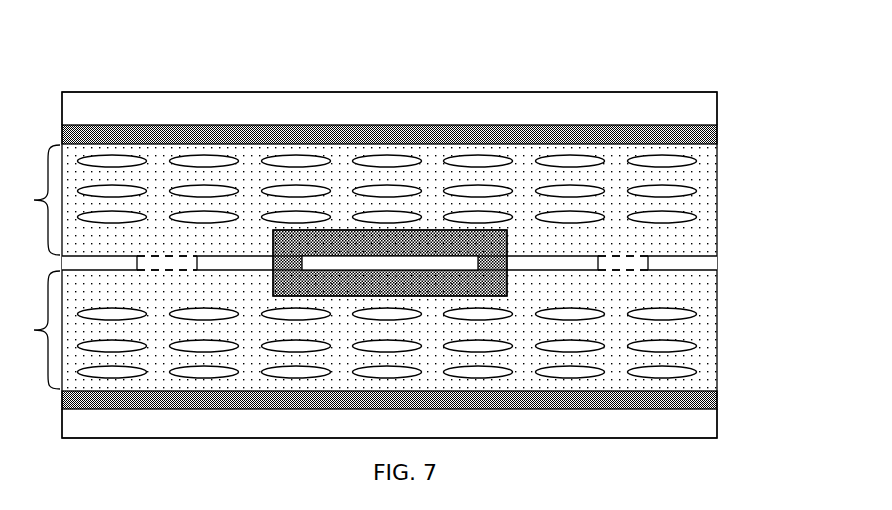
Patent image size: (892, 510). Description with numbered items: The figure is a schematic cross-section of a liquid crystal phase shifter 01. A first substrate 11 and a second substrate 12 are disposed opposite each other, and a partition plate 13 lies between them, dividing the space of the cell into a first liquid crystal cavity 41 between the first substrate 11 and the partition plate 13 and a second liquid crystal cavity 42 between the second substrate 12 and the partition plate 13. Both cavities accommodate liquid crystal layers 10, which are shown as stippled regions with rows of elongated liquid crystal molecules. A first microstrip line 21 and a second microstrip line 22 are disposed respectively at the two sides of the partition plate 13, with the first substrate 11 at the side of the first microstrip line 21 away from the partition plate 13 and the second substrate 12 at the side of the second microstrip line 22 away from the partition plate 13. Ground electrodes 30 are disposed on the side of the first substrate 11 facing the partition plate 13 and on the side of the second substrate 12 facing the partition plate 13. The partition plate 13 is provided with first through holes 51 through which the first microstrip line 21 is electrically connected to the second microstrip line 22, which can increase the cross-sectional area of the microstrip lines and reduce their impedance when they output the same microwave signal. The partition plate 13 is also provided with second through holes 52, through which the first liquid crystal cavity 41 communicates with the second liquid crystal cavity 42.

The liquid crystal phase shifter 01 is at (95, 31).
The liquid crystal layers 10 is at (700, 191).
The first substrate 11 is at (703, 104).
The second substrate 12 is at (707, 419).
The partition plate 13 is at (717, 260).
The first microstrip line 21 is at (390, 243).
The second microstrip line 22 is at (390, 283).
The ground electrodes 30 is at (706, 134).
The first liquid crystal cavity 41 is at (35, 200).
The second liquid crystal cavity 42 is at (35, 330).
The first through hole 51 is at (284, 264).
The second through hole 52 is at (163, 266).